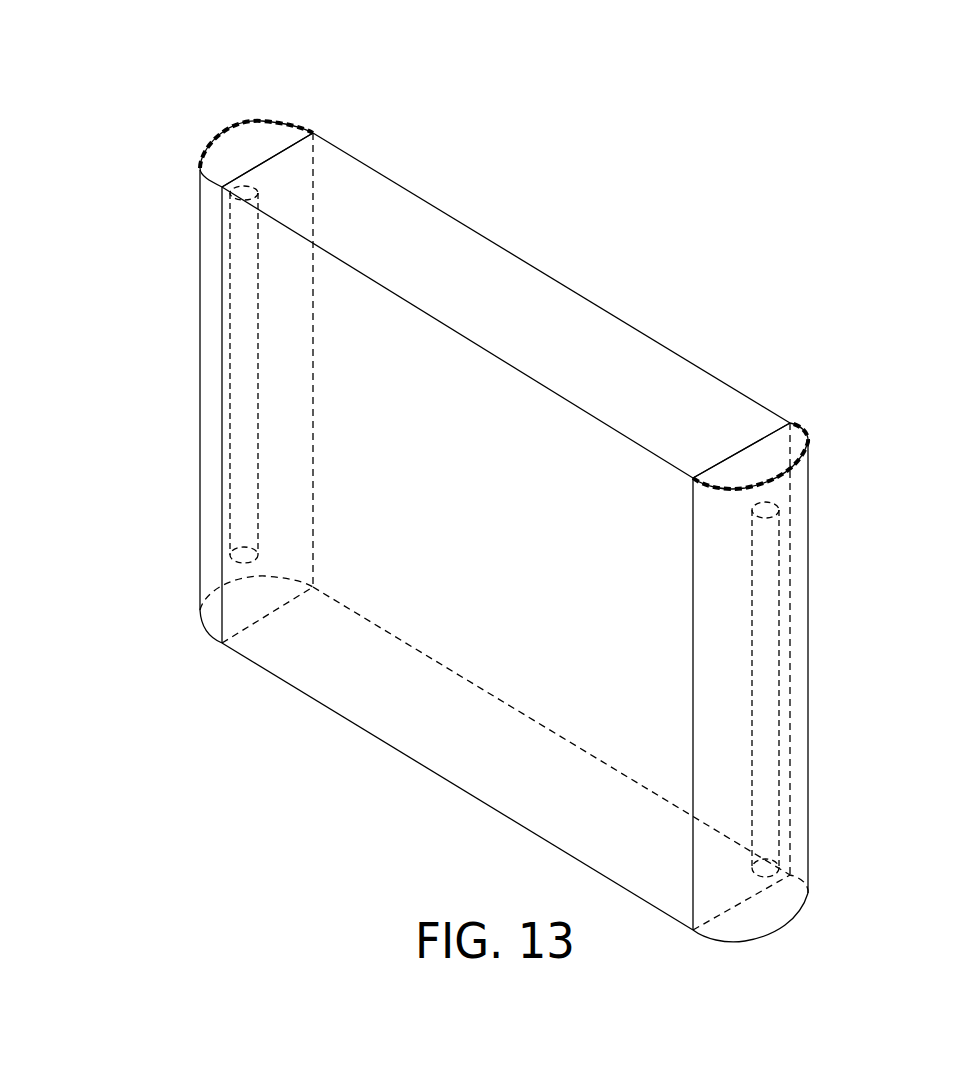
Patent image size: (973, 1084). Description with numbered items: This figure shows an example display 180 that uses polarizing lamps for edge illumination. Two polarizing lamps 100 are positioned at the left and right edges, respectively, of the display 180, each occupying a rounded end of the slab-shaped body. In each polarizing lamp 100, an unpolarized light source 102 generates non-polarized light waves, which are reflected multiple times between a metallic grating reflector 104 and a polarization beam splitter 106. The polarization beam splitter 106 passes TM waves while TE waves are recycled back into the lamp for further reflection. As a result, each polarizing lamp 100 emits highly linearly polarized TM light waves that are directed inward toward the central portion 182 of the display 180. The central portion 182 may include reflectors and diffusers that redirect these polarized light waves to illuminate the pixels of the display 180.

The polarizing lamp 100 is at (232, 118).
The unpolarized light source 102 is at (228, 240).
The metallic grating reflector 104 is at (204, 150).
The polarization beam splitter 106 is at (298, 145).
The display 180 is at (718, 243).
The central portion 182 is at (552, 277).